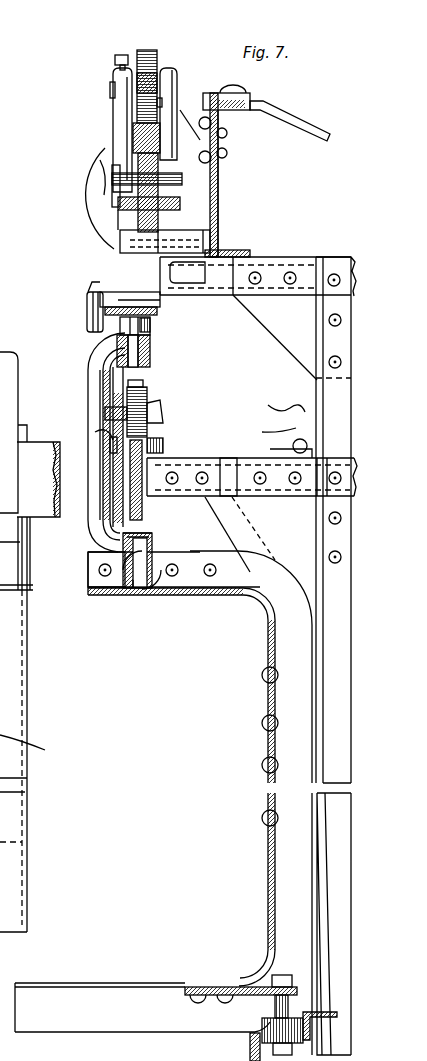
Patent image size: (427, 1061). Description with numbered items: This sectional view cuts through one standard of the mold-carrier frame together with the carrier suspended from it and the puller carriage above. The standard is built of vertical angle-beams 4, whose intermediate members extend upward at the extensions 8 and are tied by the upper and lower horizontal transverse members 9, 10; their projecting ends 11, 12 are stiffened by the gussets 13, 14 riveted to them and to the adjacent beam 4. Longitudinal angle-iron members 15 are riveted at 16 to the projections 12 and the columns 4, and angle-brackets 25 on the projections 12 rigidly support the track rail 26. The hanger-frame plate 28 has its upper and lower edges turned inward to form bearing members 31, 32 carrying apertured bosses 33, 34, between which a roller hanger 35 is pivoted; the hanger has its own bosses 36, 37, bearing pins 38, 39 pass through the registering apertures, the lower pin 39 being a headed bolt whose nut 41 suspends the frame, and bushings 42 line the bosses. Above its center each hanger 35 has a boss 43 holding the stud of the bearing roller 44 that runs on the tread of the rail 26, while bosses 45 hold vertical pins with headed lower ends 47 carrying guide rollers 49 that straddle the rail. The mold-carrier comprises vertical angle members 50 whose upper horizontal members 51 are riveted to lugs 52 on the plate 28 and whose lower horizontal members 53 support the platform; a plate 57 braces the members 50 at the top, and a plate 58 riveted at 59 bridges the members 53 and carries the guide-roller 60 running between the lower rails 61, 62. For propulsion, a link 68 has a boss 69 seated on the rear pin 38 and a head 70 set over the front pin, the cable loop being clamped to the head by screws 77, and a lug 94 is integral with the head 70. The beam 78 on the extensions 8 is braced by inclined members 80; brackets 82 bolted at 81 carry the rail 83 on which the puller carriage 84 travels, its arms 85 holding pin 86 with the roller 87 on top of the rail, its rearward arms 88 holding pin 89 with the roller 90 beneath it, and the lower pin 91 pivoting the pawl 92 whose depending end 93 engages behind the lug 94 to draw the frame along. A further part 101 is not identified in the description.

The angle-beam 4 is at (340, 702).
The upper frame extension 8 is at (322, 398).
The upper horizontal transverse member 9 is at (351, 257).
The lower horizontal transverse member 10 is at (345, 500).
The projecting end of upper transverse member 11 is at (252, 260).
The projecting end of lower transverse member 12 is at (258, 520).
The bracket or gusset 13 is at (283, 328).
The bracket or gusset 14 is at (255, 528).
The longitudinally extending member 15 is at (296, 448).
The rivet 16 is at (246, 442).
The angle-bracket 25 is at (198, 498).
The track rail 26 is at (120, 487).
The hanger-frame member 28 is at (90, 352).
The upper bearing member 31 is at (100, 340).
The lower bearing member 32 is at (98, 560).
The upper apertured boss 33 is at (152, 340).
The lower apertured boss 34 is at (162, 587).
The roller hanger 35 is at (100, 372).
The upper apertured boss of hanger 36 is at (152, 355).
The lower apertured boss of hanger 37 is at (155, 545).
The upper bearing pin 38 is at (150, 368).
The lower bearing pin 39 is at (133, 583).
The nut 41 is at (142, 587).
The bearing bushing 42 is at (118, 590).
The apertured boss 43 is at (150, 400).
The bearing roller 44 is at (148, 390).
The apertured boss 45 is at (163, 422).
The headed end 47 is at (165, 447).
The guide roller 49 is at (163, 432).
The vertical mold-carrier member 50 is at (15, 875).
The horizontal outwardly directed member 51 is at (205, 590).
The lug 52 is at (105, 585).
The horizontal member 53 is at (95, 995).
The plate 57 is at (0, 805).
The horizontal plate 58 is at (255, 985).
The rivet 59 is at (228, 985).
The guide-roller 60 is at (262, 1025).
The track rail 61 is at (250, 1040).
The track rail 62 is at (303, 1012).
The link member 68 is at (95, 290).
The apertured boss 69 is at (152, 325).
The head or boss 70 is at (95, 540).
The screw 77 is at (168, 296).
The beam member 78 is at (0, 175).
The inclined bracing member 80 is at (305, 125).
The bolt 81 is at (225, 135).
The bracket 82 is at (218, 180).
The guide-bar or rail 83 is at (133, 135).
The puller carriage 84 is at (108, 152).
The upwardly extending arm 85 is at (228, 100).
The transverse pin 86 is at (115, 60).
The running roller 87 is at (138, 52).
The rearwardly extending arm 88 is at (160, 210).
The bearing pin 89 is at (160, 185).
The running roller 90 is at (210, 122).
The transverse pin 91 is at (118, 222).
The pawl or tappet 92 is at (158, 240).
The depending end 93 is at (120, 248).
The lug or projection 94 is at (212, 250).
The arc 101 is at (100, 160).